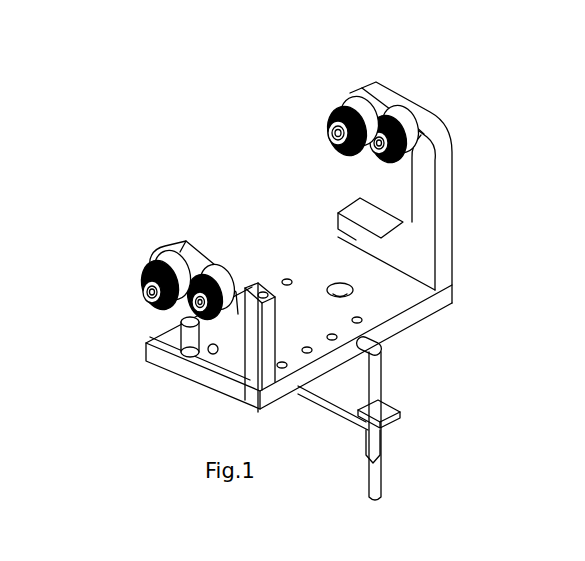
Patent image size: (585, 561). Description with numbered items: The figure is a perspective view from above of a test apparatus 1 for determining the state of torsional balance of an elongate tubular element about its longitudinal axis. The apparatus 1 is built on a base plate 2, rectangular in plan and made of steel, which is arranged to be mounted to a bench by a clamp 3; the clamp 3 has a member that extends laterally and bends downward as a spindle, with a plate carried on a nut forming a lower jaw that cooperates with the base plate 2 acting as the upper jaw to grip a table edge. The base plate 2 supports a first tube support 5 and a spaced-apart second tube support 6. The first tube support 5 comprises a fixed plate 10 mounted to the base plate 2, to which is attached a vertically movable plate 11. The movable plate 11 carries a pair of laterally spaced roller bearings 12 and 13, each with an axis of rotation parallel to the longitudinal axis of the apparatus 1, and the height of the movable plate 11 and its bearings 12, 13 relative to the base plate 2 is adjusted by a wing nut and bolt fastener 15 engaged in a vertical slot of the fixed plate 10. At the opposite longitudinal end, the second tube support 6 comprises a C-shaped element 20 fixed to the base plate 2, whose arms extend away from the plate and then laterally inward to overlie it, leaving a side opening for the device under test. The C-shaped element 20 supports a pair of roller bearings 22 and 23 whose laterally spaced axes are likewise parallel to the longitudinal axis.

The test apparatus 1 is at (129, 134).
The base plate 2 is at (412, 317).
The clamp 3 is at (360, 446).
The first tube support 5 is at (109, 262).
The second tube support 6 is at (498, 150).
The fixed plate 10 is at (236, 374).
The movable plate 11 is at (160, 320).
The roller bearing 12 is at (241, 268).
The roller bearing 13 is at (148, 252).
The wing nut and bolt fastener 15 is at (182, 354).
The C-shaped element 20 is at (452, 233).
The roller bearing 22 is at (403, 123).
The roller bearing 23 is at (346, 103).